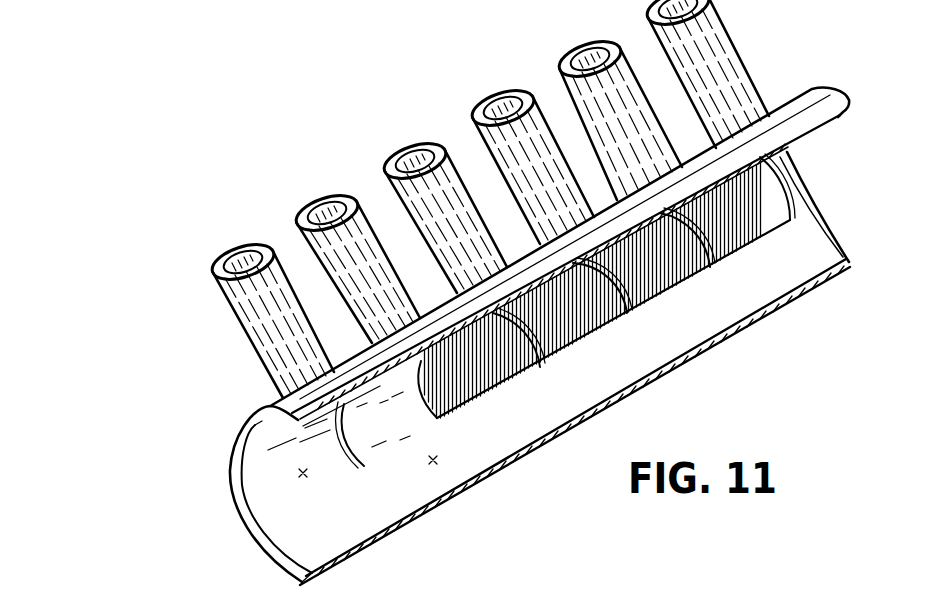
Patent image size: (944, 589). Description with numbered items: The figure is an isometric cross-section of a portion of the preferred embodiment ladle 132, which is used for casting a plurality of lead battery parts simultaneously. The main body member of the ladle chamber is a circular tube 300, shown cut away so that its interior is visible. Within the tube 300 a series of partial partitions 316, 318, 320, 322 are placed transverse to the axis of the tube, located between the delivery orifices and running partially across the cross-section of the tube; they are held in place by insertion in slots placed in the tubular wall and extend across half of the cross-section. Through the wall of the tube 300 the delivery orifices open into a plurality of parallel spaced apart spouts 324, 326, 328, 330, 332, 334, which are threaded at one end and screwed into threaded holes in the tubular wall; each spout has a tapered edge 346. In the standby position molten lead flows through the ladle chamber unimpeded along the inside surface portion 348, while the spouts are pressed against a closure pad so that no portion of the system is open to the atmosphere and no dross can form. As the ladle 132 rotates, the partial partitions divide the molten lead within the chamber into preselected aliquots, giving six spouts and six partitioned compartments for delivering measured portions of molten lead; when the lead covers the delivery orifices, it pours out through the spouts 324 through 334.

The ladle 132 is at (138, 477).
The circular tube 300 is at (298, 478).
The partition 316 is at (517, 368).
The partition 318 is at (605, 325).
The partition 320 is at (678, 280).
The partition 322 is at (757, 235).
The spout 324 is at (265, 342).
The spout 326 is at (343, 283).
The spout 328 is at (400, 238).
The spout 330 is at (520, 182).
The spout 332 is at (610, 128).
The spout 334 is at (703, 88).
The tapered edge 346 is at (222, 248).
The inside surface portion 348 is at (435, 462).